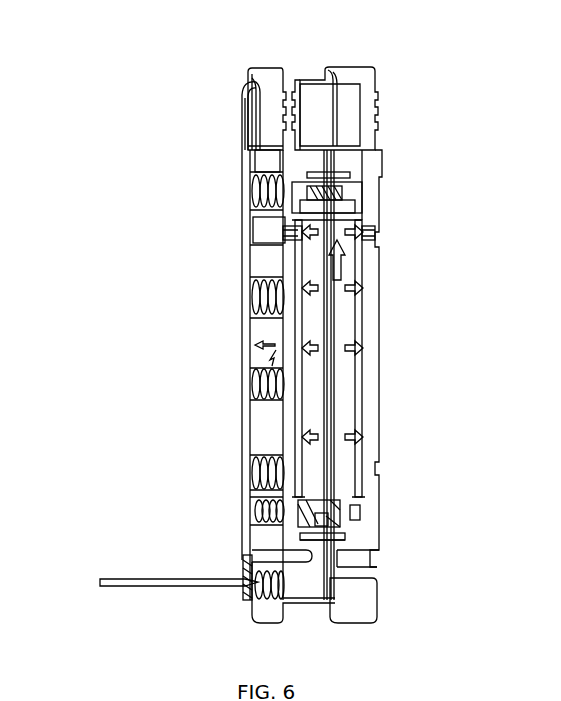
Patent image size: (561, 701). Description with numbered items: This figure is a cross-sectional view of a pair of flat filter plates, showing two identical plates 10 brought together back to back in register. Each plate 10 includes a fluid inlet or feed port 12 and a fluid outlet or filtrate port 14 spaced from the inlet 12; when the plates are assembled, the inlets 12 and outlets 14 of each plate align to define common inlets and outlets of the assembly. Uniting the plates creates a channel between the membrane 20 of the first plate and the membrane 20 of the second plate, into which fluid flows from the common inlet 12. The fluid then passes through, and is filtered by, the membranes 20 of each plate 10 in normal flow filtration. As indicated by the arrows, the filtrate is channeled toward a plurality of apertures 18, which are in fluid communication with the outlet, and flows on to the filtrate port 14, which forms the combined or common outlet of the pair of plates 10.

The plate 10 is at (238, 86).
The fluid outlet or filtrate port 14 is at (242, 110).
The apertures 18 is at (300, 232).
The membrane 20 is at (308, 410).
The fluid inlet or feed port 12 is at (243, 563).